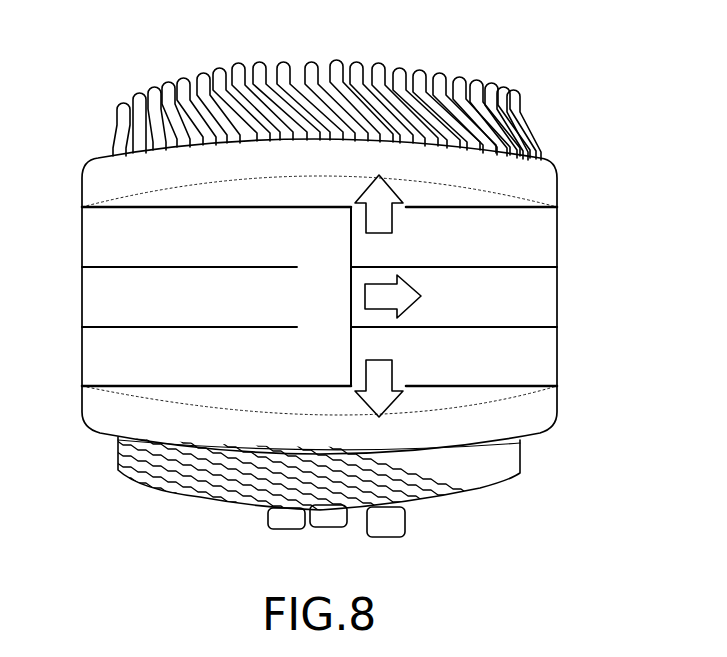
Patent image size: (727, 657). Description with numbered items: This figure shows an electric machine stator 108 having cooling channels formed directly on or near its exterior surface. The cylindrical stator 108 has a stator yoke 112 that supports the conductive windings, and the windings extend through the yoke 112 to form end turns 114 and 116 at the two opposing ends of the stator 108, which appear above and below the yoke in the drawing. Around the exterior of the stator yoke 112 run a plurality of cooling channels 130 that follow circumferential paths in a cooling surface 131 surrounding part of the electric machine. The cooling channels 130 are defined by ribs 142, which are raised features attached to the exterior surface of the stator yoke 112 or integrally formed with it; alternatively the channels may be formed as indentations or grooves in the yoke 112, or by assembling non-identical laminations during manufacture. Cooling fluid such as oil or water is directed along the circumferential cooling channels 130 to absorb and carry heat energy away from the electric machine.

The stator 108 is at (135, 55).
The stator yoke 112 is at (272, 167).
The end turns 114 is at (527, 105).
The end turns 116 is at (480, 490).
The cooling channels 130 is at (492, 305).
The cooling surface 131 is at (527, 235).
The ribs 142 is at (118, 327).